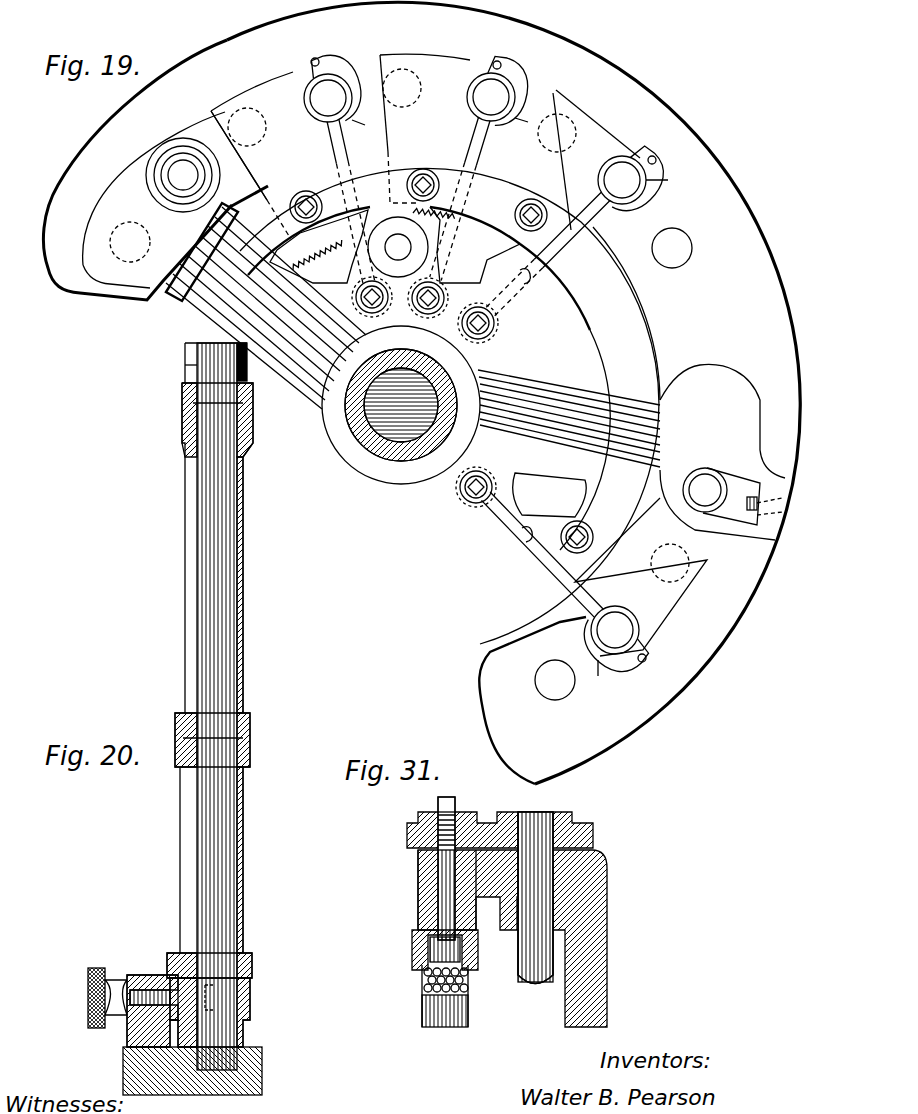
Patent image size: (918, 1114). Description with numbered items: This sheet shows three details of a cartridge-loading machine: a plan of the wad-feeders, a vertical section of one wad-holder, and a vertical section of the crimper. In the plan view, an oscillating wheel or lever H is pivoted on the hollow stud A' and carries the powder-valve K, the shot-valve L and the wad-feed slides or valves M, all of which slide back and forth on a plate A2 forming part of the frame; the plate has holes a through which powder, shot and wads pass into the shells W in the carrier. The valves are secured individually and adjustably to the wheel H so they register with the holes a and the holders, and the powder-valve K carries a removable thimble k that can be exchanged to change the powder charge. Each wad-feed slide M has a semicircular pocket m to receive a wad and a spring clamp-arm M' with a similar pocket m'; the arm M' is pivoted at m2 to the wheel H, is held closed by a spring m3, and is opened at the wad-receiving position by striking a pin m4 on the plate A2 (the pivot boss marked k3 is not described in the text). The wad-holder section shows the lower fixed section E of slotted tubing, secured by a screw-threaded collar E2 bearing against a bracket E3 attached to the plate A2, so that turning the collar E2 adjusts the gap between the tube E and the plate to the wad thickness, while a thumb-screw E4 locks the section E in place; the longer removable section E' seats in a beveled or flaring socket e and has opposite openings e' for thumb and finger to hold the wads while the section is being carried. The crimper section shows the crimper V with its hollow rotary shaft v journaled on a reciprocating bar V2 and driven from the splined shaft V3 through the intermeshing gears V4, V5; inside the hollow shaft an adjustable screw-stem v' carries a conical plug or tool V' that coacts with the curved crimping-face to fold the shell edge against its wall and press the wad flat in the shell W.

In FIG. 19, the plate A2 is at (421, 393).
In FIG. 20, the plate A2 is at (262, 1065).
In FIG. 19, the hollow stud A' is at (399, 417).
In FIG. 19, the crimper V is at (400, 445).
In FIG. 31, the crimper V is at (380, 961).
In FIG. 19, the powder-valve K is at (194, 252).
In FIG. 19, the removable thimble k is at (165, 178).
In FIG. 19, the pawl pivot k3 is at (395, 245).
In FIG. 19, the holes or openings a is at (712, 565).
In FIG. 19, the oscillating wheel or lever H is at (413, 338).
In FIG. 19, the shot-valve L is at (722, 452).
In FIG. 19, the wad-feed slides or valves M is at (420, 348).
In FIG. 19, the spring clamp-arm M' is at (500, 363).
In FIG. 19, the semicircular pocket m is at (473, 363).
In FIG. 19, the semicircular pocket m' is at (520, 404).
In FIG. 19, the pivot m2 is at (463, 494).
In FIG. 19, the spring m3 is at (528, 538).
In FIG. 19, the pin or projection m4 is at (660, 658).
In FIG. 20, the wad-holder section E is at (221, 705).
In FIG. 20, the removable section E' is at (208, 706).
In FIG. 20, the beveled or flaring socket e is at (201, 418).
In FIG. 20, the openings e' is at (209, 368).
In FIG. 20, the screw-threaded collar E2 is at (252, 965).
In FIG. 20, the bracket E3 is at (250, 993).
In FIG. 20, the set-screw or thumb-screw E4 is at (88, 1000).
In FIG. 31, the reciprocating bar V2 is at (607, 950).
In FIG. 31, the splined shaft V3 is at (535, 982).
In FIG. 31, the gear V4 is at (565, 795).
In FIG. 31, the gear V5 is at (475, 812).
In FIG. 31, the rotary shaft v is at (429, 890).
In FIG. 31, the adjustable screw-stem v' is at (422, 868).
In FIG. 31, the conical plug or tool V' is at (425, 949).
In FIG. 31, the shells W is at (468, 982).